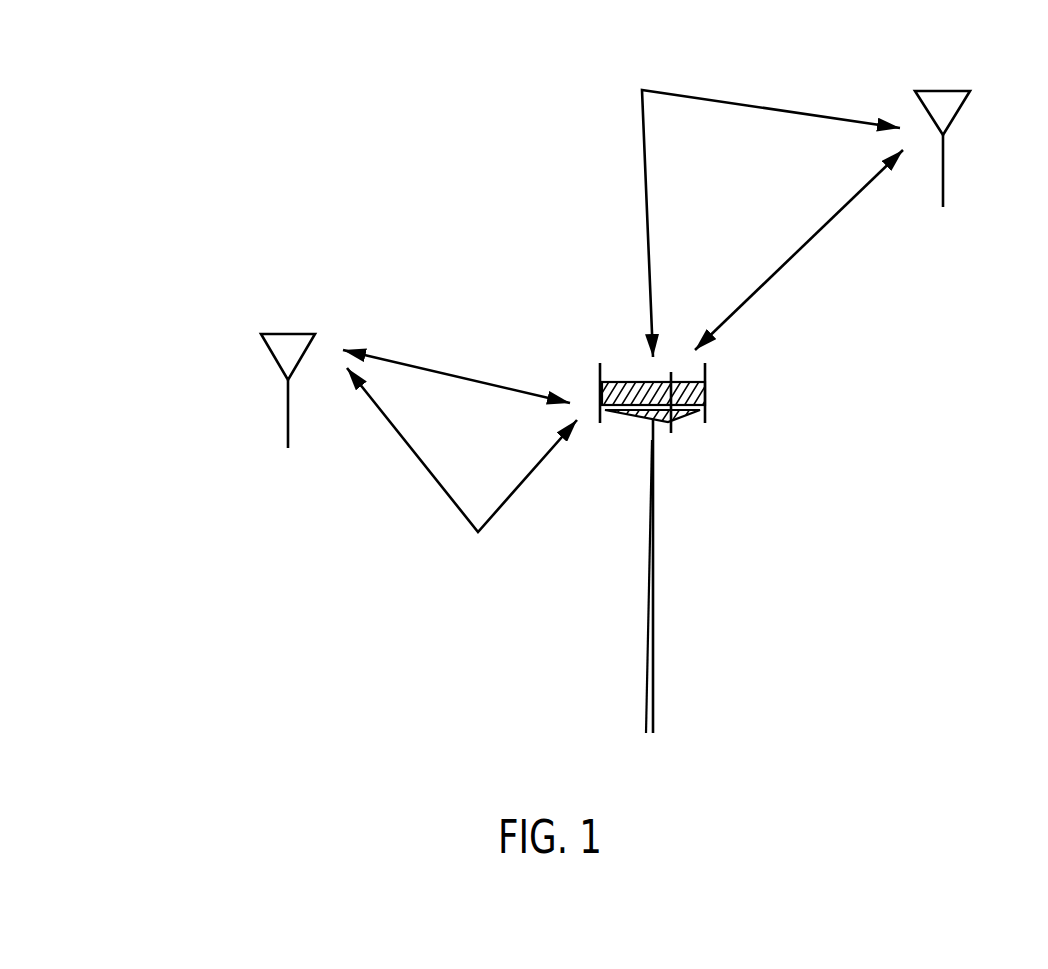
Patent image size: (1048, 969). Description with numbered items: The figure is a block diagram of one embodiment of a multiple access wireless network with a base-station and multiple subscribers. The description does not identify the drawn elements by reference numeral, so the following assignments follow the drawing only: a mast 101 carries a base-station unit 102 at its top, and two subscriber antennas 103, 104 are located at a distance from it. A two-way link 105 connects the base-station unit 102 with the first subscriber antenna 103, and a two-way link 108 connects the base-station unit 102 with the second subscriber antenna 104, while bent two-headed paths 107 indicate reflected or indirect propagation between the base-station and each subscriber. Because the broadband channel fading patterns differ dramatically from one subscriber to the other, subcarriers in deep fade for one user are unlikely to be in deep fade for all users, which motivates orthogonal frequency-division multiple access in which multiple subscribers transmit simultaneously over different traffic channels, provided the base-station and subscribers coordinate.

The pole / mast 101 is at (653, 543).
The detector head 102 is at (705, 392).
The transmitter antenna 103 is at (943, 165).
The receiver antenna 104 is at (288, 408).
The signal path 105 is at (813, 242).
The reflected / scattered signal path 107 is at (717, 98).
The signal path 108 is at (423, 367).